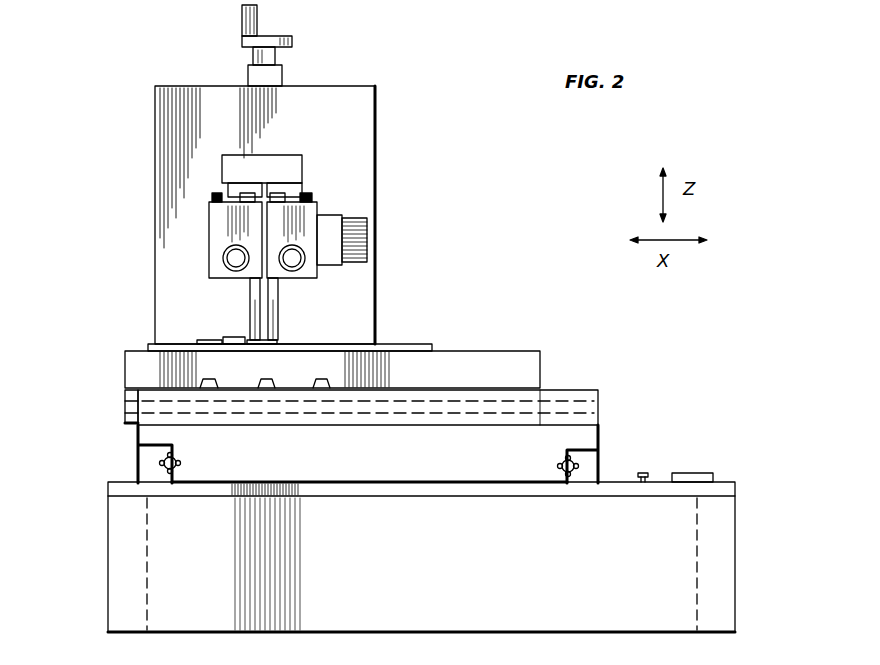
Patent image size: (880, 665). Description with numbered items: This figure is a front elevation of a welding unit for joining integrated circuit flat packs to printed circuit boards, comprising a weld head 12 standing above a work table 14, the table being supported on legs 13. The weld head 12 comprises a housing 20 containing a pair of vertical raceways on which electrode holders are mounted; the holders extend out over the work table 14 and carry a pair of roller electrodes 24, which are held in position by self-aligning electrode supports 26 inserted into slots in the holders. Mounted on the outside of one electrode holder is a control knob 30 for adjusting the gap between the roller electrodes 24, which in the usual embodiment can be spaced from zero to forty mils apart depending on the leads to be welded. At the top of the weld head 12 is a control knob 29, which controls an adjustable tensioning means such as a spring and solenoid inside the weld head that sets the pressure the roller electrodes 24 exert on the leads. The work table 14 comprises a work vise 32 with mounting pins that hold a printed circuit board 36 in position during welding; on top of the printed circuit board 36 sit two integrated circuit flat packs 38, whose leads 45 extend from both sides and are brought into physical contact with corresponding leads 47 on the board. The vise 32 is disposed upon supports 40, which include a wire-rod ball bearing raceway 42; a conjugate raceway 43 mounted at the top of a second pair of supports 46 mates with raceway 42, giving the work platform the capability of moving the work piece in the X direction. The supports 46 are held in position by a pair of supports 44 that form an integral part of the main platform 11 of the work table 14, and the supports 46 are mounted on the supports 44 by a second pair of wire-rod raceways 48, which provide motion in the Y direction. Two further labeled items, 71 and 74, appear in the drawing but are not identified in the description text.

The main platform 11 is at (620, 483).
The weld head 12 is at (388, 149).
The legs 13 is at (108, 548).
The work table 14 is at (102, 420).
The housing 20 is at (375, 87).
The roller electrodes 24 is at (268, 302).
The self-aligning electrode supports 26 is at (250, 281).
The control knob 29 is at (292, 41).
The control knob 30 is at (367, 235).
The work vise 32 is at (540, 351).
The printed circuit board 36 is at (430, 345).
The integrated circuit flat packs 38 is at (238, 338).
The supports 40 is at (545, 393).
The wire-rod ball bearing raceway 42 is at (125, 407).
The conjugate raceway 43 is at (598, 408).
The supports 44 is at (598, 455).
The leads 45 is at (207, 338).
The supports 46 is at (598, 432).
The leads 47 is at (197, 340).
The wire-rod raceways 48 is at (162, 463).
The leader 71 is at (328, 380).
The stops 74 is at (262, 379).